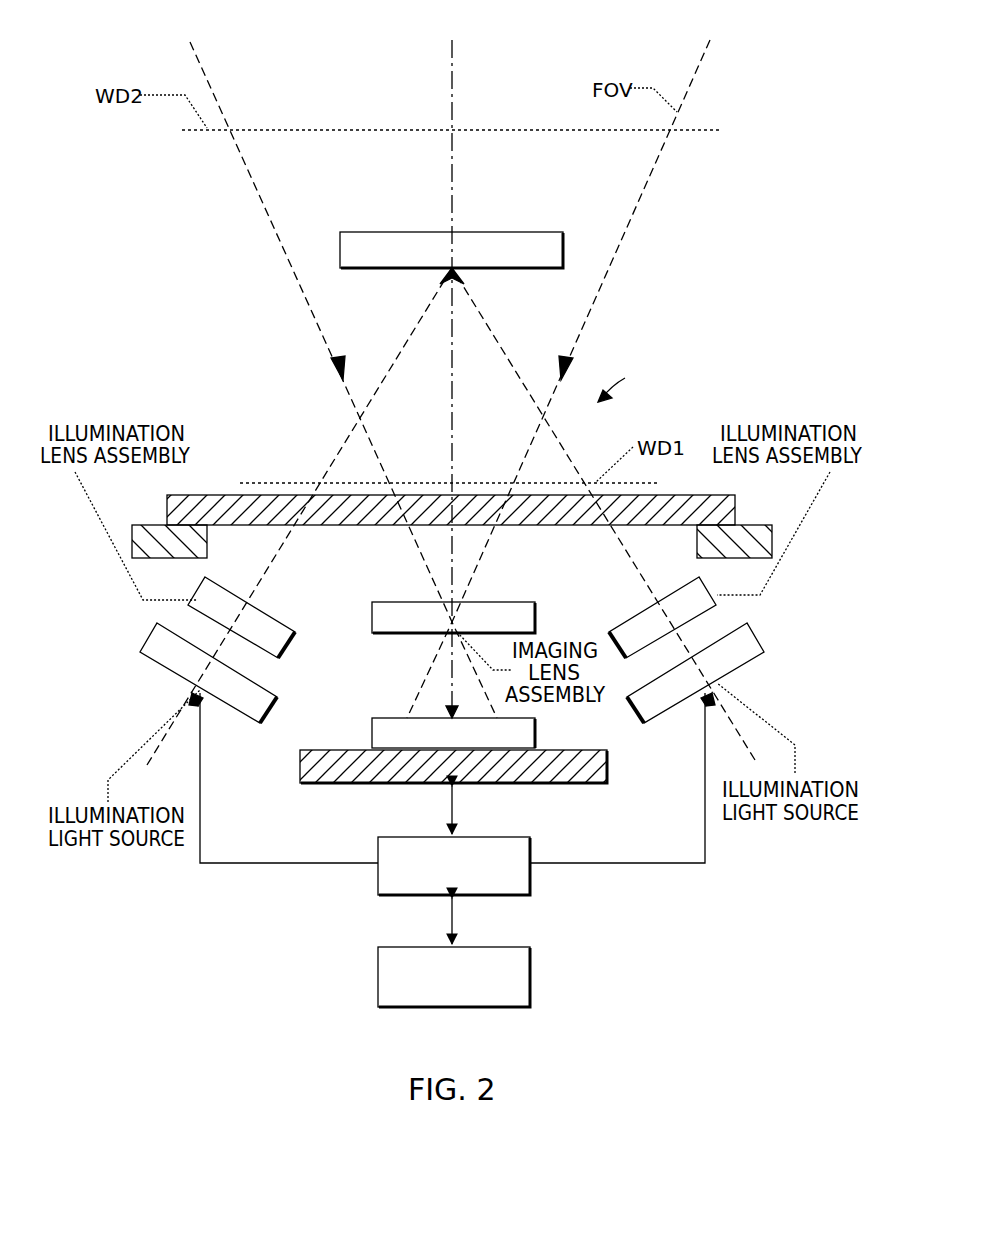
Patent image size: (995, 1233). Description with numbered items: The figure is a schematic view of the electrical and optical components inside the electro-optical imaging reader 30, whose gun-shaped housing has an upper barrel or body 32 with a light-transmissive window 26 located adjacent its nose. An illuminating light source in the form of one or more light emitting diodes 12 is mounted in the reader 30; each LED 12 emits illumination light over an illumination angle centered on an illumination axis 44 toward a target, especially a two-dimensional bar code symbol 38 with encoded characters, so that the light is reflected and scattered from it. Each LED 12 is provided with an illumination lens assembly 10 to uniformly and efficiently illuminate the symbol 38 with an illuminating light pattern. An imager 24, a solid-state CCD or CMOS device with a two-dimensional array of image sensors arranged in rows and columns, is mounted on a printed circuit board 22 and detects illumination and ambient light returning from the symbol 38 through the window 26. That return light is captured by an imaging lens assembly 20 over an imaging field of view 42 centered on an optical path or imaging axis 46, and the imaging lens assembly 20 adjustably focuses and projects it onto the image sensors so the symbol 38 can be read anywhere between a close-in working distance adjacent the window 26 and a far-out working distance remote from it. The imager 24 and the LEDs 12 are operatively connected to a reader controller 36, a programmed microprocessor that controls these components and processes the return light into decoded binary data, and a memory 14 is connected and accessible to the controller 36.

The illumination lens assembly 10 is at (197, 592).
The light emitting diode 12 is at (143, 637).
The memory 14 is at (530, 987).
The imaging lens assembly 20 is at (372, 616).
The printed circuit board 22 is at (300, 766).
The imager 24 is at (372, 737).
The light-transmissive window 26 is at (167, 510).
The imaging reader 30 is at (625, 384).
The body 32 is at (770, 525).
The reader controller 36 is at (530, 885).
The symbol 38 is at (385, 232).
The imaging field of view 42 is at (645, 163).
The illumination axis 44 is at (405, 340).
The imaging axis 46 is at (455, 88).